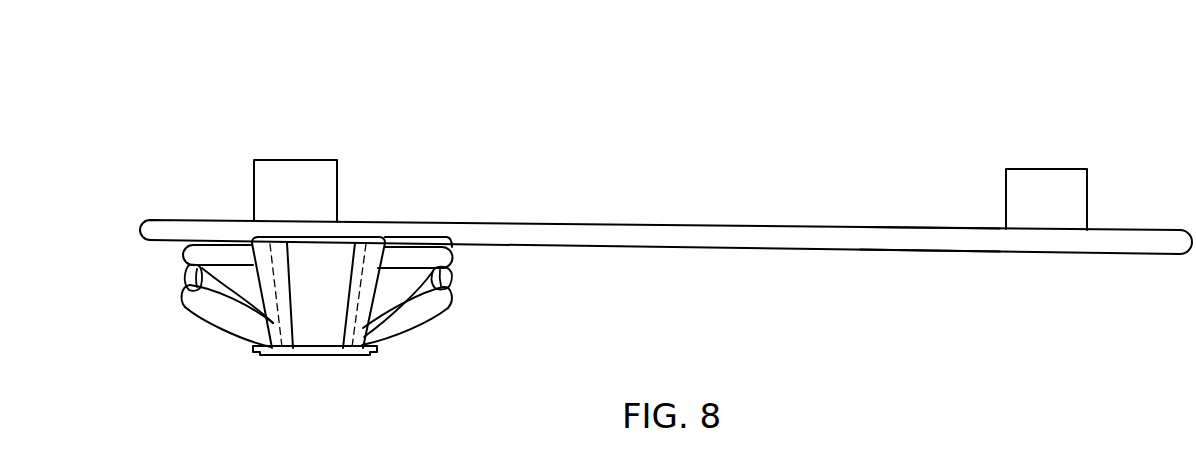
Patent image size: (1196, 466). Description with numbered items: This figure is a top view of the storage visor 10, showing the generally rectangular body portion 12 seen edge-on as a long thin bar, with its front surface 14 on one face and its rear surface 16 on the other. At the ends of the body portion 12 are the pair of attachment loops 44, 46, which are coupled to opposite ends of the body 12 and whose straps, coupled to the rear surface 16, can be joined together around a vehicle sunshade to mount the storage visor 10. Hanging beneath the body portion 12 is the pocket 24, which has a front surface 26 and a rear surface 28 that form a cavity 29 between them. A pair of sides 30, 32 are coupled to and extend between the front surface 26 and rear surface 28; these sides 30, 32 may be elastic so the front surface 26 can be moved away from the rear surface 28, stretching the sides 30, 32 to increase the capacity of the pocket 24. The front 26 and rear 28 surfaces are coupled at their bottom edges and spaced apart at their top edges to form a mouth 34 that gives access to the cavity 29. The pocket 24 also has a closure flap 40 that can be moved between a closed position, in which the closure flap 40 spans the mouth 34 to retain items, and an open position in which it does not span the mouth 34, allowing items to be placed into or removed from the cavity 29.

The storage visor 10 is at (662, 143).
The body portion 12 is at (813, 240).
The front surface 14 is at (900, 251).
The rear surface 16 is at (916, 226).
The pocket 24 is at (417, 338).
The front surface 26 is at (213, 333).
The rear surface 28 is at (208, 250).
The cavity 29 is at (380, 283).
The side 30 is at (187, 268).
The side 32 is at (453, 278).
The mouth 34 is at (400, 283).
The closure flap 40 is at (313, 308).
The attachment loop 44 is at (1071, 193).
The attachment loop 46 is at (298, 176).